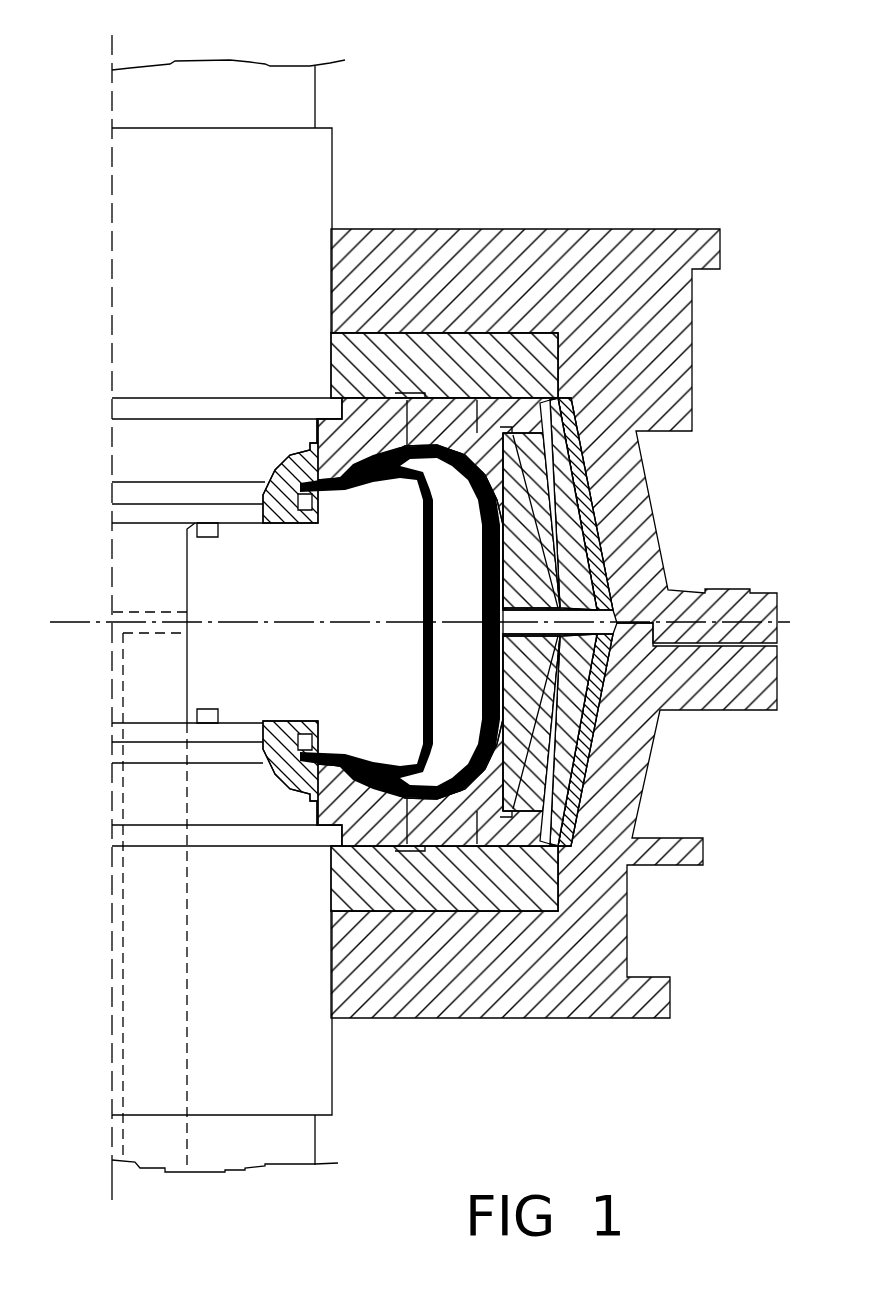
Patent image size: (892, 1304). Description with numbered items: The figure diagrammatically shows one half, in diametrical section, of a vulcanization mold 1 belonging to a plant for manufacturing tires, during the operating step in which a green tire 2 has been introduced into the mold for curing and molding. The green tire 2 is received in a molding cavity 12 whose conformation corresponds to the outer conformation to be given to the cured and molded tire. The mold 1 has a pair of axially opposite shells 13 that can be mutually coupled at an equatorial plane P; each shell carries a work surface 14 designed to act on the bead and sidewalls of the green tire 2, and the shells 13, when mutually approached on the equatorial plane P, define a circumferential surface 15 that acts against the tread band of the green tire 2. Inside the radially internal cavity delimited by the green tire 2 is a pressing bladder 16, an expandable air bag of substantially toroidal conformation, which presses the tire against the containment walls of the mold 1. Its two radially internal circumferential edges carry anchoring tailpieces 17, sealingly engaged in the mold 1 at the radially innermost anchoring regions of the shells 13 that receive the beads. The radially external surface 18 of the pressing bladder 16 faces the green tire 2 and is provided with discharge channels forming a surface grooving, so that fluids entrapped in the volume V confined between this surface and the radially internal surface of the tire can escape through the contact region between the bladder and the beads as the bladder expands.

The vulcanization mold 1 is at (689, 131).
The green tire 2 is at (483, 575).
The molding cavity 12 is at (472, 710).
The shells 13 is at (495, 397).
The work surface 14 is at (406, 397).
The circumferential surface 15 is at (481, 649).
The pressing bladder 16 is at (421, 523).
The anchoring tailpieces 17 is at (313, 484).
The radially external surface 18 is at (437, 548).
The volume V is at (503, 498).
The equatorial plane P is at (78, 622).